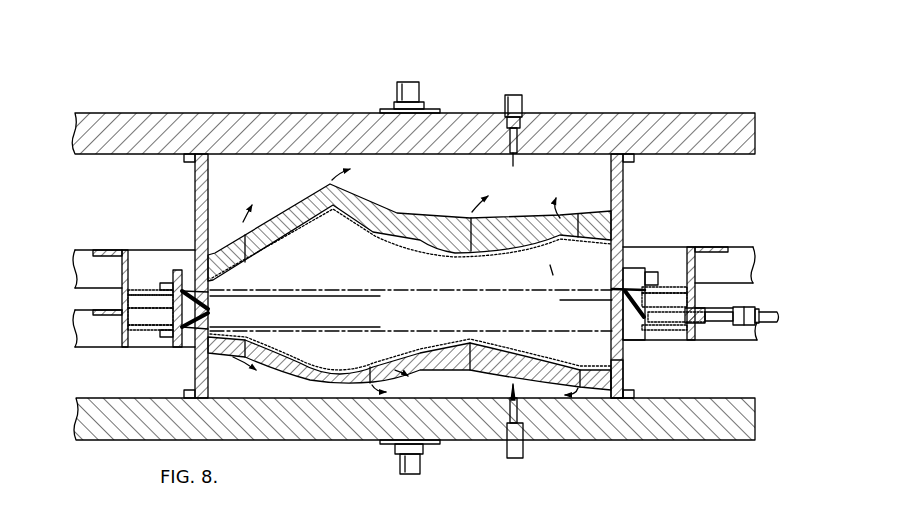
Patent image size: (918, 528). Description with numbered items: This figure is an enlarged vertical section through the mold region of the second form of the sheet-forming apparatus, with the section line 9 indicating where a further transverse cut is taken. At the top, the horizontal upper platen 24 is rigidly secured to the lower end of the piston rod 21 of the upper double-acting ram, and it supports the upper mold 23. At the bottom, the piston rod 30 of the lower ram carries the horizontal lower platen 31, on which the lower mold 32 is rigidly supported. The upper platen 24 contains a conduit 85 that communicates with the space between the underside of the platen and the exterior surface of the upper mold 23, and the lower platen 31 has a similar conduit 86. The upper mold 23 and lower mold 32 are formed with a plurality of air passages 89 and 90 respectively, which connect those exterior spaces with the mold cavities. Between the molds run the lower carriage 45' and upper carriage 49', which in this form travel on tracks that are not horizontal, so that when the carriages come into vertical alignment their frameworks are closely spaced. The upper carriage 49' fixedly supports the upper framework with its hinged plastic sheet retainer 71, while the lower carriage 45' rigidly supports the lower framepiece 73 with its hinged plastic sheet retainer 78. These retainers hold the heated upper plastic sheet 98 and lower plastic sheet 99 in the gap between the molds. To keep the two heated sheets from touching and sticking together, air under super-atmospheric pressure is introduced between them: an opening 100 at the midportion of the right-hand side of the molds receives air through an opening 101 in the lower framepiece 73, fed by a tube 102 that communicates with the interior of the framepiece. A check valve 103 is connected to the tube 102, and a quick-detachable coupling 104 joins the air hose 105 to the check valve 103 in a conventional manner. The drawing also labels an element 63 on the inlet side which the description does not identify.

The section line 9- 9 is at (578, 107).
The piston rod 21 is at (418, 94).
The upper mold 23 is at (624, 213).
The upper platen 24 is at (721, 118).
The piston rod 30 is at (420, 468).
The lower platen 31 is at (720, 442).
The lower mold 32 is at (623, 370).
The lower carriage 45' is at (123, 316).
The upper carriage 49' is at (697, 275).
The inlet tube 63 is at (138, 289).
The plastic sheet retainer 71 is at (648, 272).
The lower framepiece 73 is at (133, 330).
The plastic sheet retainer 78 is at (640, 342).
The conduit 85 is at (505, 108).
The conduit 86 is at (515, 460).
The air passages 89 is at (340, 186).
The air passages 90 is at (246, 352).
The upper plastic sheet 98 is at (365, 290).
The lower plastic sheet 99 is at (360, 331).
The opening 100 is at (615, 300).
The opening 101 is at (692, 325).
The tube 102 is at (725, 323).
The check valve 103 is at (742, 308).
The quick-detachable coupling 104 is at (758, 323).
The air hose 105 is at (765, 313).